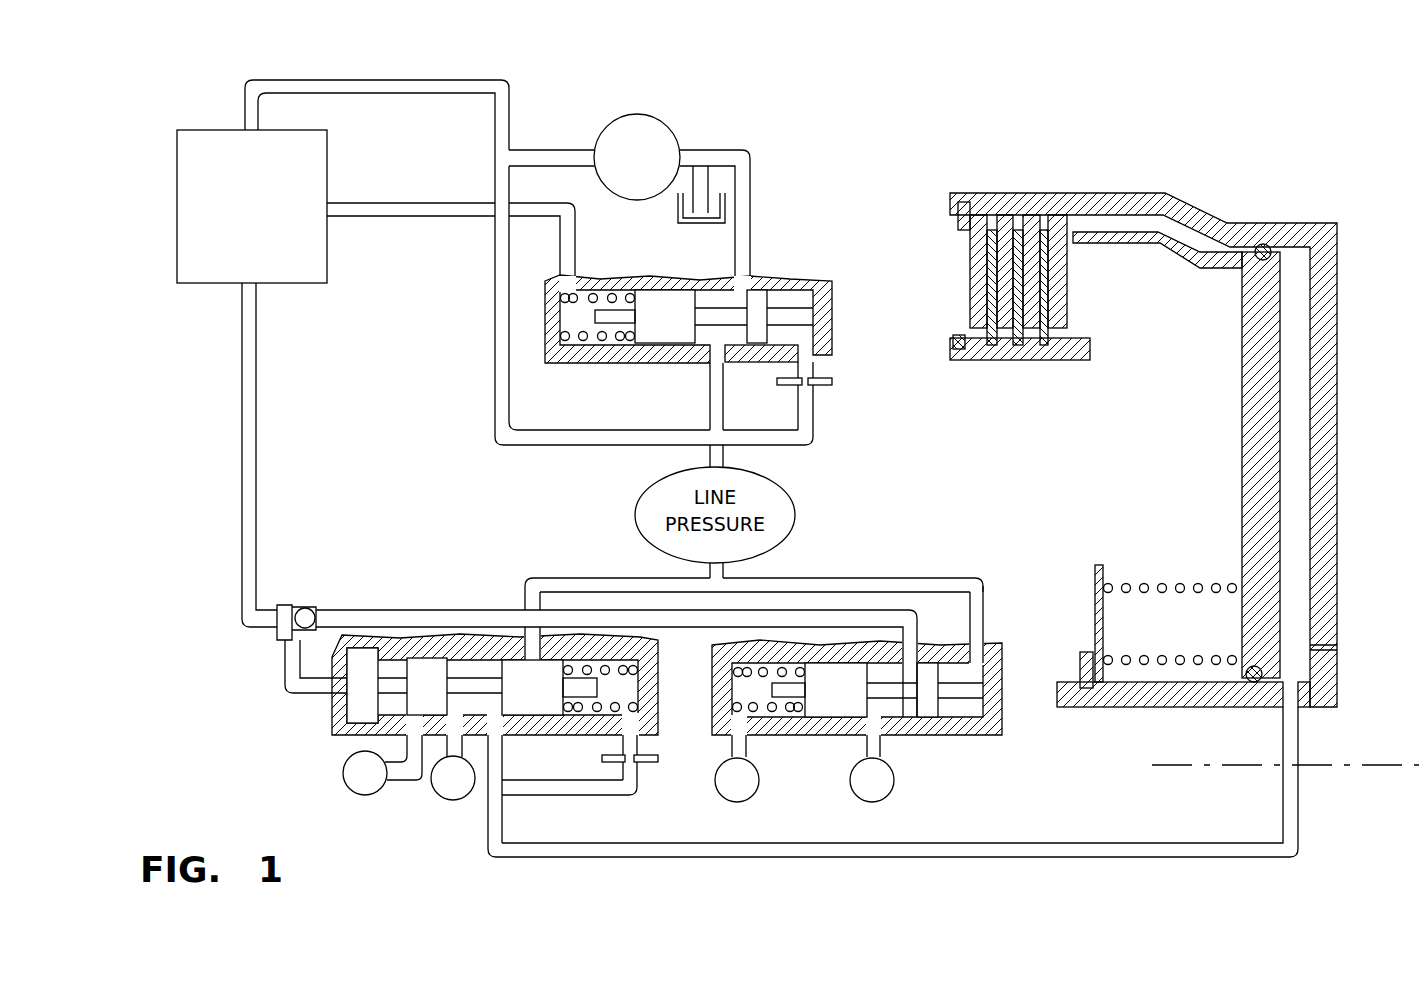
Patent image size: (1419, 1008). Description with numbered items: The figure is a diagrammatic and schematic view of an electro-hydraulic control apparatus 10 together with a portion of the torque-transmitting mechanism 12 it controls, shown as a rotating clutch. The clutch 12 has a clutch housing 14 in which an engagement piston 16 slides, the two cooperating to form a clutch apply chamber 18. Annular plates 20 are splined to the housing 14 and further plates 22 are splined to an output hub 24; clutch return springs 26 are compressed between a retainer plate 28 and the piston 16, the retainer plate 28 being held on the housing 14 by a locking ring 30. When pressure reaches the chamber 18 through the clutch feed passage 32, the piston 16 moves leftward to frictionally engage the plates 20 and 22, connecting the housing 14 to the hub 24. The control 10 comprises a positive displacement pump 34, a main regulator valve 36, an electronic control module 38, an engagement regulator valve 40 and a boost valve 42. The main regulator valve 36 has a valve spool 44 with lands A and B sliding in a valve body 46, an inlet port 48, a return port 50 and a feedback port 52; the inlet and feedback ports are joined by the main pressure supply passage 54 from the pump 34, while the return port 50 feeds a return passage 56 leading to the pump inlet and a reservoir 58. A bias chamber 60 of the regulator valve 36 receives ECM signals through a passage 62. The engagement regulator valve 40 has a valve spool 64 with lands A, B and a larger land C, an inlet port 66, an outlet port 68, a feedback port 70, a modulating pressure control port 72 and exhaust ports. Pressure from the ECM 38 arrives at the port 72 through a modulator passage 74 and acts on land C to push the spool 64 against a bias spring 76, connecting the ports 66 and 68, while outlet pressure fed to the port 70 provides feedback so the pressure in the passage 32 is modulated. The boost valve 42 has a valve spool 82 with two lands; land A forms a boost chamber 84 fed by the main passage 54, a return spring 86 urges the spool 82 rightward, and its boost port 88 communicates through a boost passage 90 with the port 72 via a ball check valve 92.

The electro-hydraulic control apparatus 10 is at (820, 188).
The torque-transmitting mechanism 12 is at (1163, 451).
The clutch housing 14 is at (1336, 236).
The engagement piston 16 is at (1292, 360).
The clutch apply chamber 18 is at (1302, 431).
The annular plates 20 is at (1058, 214).
The plates 22 is at (1018, 346).
The output hub 24 is at (950, 345).
The clutch return springs 26 is at (1158, 583).
The retainer plate 28 is at (1095, 582).
The locking ring 30 is at (1080, 680).
The clutch feed passage 32 is at (585, 860).
The positive displacement pump 34 is at (602, 114).
The main regulator valve 36 is at (684, 309).
The electronic control module 38 is at (215, 122).
The engagement regulator valve 40 is at (518, 671).
The boost valve 42 is at (864, 745).
The valve spool 44 is at (609, 298).
The valve body 46 is at (806, 282).
The inlet port 48 is at (711, 380).
The return port 50 is at (740, 298).
The feedback port 52 is at (816, 362).
The main pressure supply passage 54 is at (494, 318).
The return passage 56 is at (752, 148).
The reservoir 58 is at (708, 208).
The bias chamber 60 is at (584, 341).
The passage 62 is at (389, 200).
The valve spool 64 is at (372, 678).
The inlet port 66 is at (530, 648).
The outlet port 68 is at (500, 736).
The feedback port 70 is at (640, 751).
The modulating pressure control port 72 is at (341, 694).
The modulator passage 74 is at (240, 452).
The bias spring 76 is at (619, 667).
The valve spool 82 is at (956, 686).
The boost chamber 84 is at (960, 706).
The return spring 86 is at (752, 712).
The boost port 88 is at (911, 664).
The boost passage 90 is at (808, 616).
The ball check valve 92 is at (292, 600).